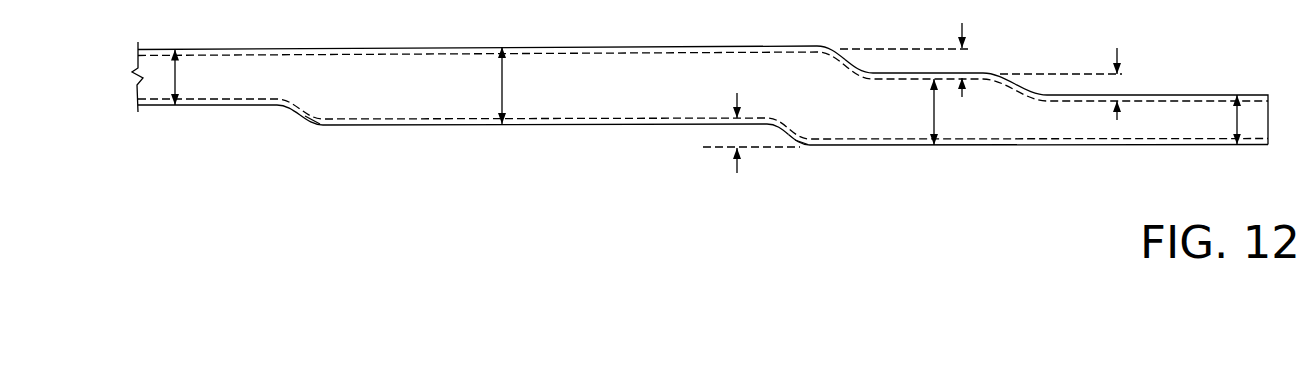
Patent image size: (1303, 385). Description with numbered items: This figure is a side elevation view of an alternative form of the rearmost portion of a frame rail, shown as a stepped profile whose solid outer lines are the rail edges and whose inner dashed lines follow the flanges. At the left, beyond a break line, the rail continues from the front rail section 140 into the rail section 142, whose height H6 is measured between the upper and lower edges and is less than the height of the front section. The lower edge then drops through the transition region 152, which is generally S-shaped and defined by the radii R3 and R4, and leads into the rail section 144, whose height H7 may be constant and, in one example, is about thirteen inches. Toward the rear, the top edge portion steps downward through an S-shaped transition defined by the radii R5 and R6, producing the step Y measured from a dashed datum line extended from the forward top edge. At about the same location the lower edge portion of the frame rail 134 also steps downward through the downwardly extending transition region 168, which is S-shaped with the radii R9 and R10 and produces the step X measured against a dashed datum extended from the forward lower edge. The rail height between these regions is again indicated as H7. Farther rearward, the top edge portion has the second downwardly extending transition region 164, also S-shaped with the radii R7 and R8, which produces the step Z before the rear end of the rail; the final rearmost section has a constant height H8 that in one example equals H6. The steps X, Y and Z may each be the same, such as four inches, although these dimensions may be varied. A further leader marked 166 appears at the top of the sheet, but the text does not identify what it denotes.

The lower flange 134 is at (593, 126).
The rail section 142 is at (153, 66).
The front rail section 140 is at (542, 47).
The rail section 144 is at (637, 83).
The transition 166 is at (857, 35).
The second downwardly extending transition region 164 is at (1033, 67).
The transition region 152 is at (313, 137).
The downwardly extending transition region 168 is at (782, 152).
The height H6 is at (176, 78).
The height H7 is at (502, 90).
The height H8 is at (1237, 125).
The radius R3 is at (280, 106).
The radius R4 is at (325, 121).
The radius R5 is at (827, 50).
The radius R6 is at (870, 72).
The radius R7 is at (1002, 80).
The radius R8 is at (1047, 95).
The radius R9 is at (768, 127).
The radius R10 is at (807, 142).
The step X is at (733, 135).
The step Y is at (963, 62).
The step Z is at (1122, 85).